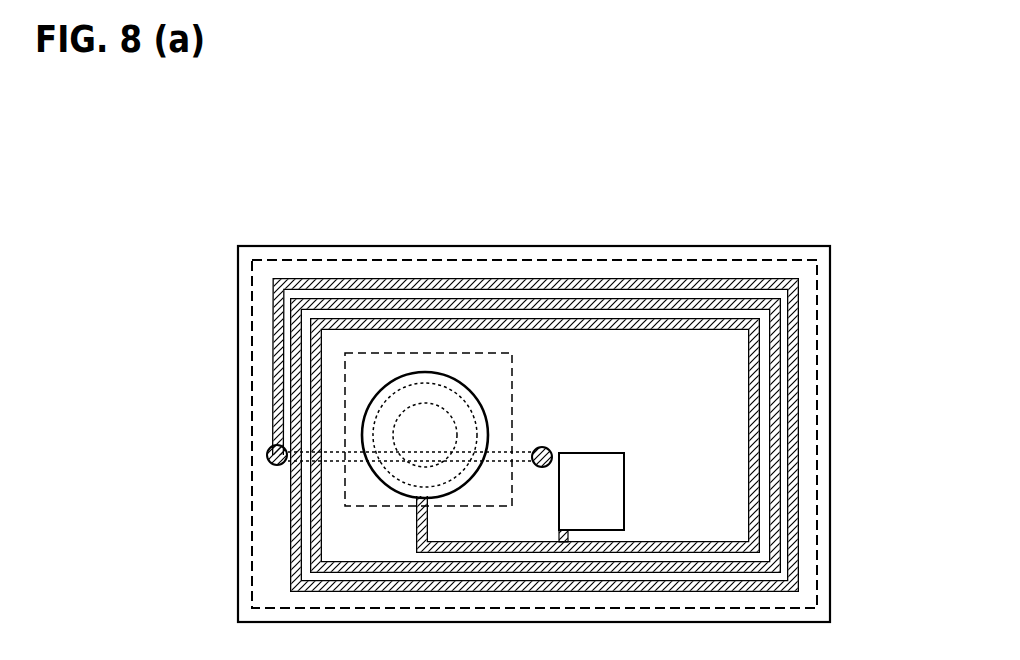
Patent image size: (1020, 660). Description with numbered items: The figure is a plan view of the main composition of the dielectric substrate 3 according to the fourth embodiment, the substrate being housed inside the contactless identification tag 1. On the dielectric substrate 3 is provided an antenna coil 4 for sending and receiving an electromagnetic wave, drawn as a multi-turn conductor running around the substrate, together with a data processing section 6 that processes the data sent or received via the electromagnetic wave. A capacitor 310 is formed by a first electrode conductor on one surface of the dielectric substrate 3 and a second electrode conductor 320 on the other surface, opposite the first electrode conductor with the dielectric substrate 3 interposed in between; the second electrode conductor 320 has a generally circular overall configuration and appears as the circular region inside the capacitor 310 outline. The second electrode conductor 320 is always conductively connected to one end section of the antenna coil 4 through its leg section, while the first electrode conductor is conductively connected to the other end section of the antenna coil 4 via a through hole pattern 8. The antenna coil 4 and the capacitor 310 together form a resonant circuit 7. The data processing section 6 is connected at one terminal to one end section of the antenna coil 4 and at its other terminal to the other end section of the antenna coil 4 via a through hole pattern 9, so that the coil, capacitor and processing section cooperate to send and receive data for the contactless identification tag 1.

The contactless identification tag 1 is at (713, 214).
The dielectric substrate 3 is at (831, 303).
The antenna coil 4 is at (797, 403).
The data processing section 6 is at (612, 492).
The resonant circuit 7 is at (817, 498).
The through hole pattern 8 is at (267, 449).
The through hole pattern 9 is at (548, 449).
The capacitor 310 is at (513, 366).
The second electrode conductor 320 is at (489, 402).